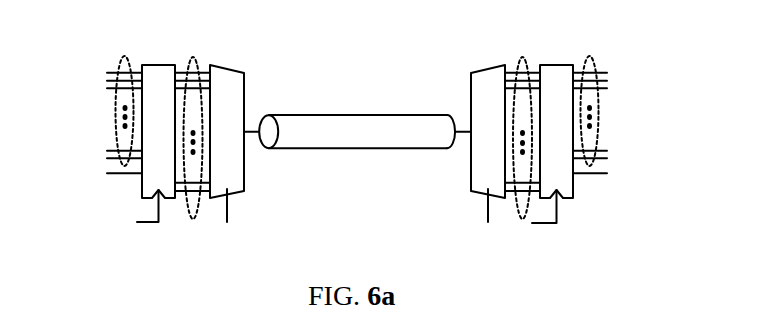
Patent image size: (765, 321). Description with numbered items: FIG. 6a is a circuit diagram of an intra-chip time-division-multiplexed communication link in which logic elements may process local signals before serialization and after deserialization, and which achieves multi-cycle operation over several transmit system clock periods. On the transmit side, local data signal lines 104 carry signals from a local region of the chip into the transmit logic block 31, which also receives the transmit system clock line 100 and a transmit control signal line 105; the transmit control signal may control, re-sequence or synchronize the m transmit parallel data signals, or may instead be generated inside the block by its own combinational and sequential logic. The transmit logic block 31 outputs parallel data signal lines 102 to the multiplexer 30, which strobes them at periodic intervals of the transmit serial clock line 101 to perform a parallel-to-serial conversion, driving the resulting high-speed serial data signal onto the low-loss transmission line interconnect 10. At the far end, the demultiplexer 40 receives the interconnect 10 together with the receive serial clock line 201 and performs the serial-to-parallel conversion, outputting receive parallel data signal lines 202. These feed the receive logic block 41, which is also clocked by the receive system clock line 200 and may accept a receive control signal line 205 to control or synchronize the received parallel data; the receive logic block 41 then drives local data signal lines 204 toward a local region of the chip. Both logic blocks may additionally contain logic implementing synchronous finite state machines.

The low-loss transmission line interconnect 10 is at (277, 115).
The multiplexer 30 is at (227, 70).
The transmit logic block 31 is at (158, 70).
The demultiplexer 40 is at (490, 68).
The receive logic block 41 is at (558, 68).
The transmit system clock line 100 is at (142, 222).
The transmit serial clock line 101 is at (230, 218).
The parallel data signal lines 102 is at (193, 209).
The local data signal lines 104 is at (125, 57).
The transmit control signal line 105 is at (118, 173).
The receive system clock line 200 is at (538, 225).
The receive serial clock line 201 is at (488, 218).
The parallel data signal lines 202 is at (523, 53).
The local data signal lines 204 is at (597, 102).
The second stator winding terminals 205 is at (598, 174).